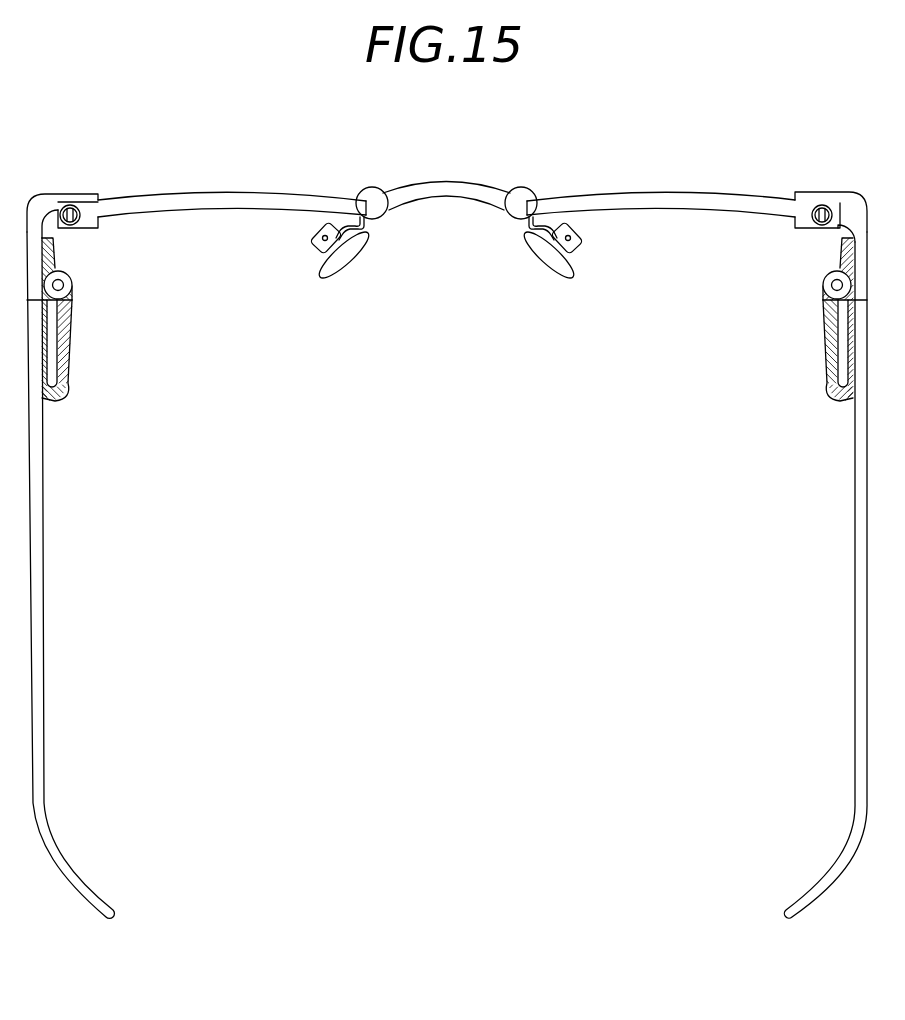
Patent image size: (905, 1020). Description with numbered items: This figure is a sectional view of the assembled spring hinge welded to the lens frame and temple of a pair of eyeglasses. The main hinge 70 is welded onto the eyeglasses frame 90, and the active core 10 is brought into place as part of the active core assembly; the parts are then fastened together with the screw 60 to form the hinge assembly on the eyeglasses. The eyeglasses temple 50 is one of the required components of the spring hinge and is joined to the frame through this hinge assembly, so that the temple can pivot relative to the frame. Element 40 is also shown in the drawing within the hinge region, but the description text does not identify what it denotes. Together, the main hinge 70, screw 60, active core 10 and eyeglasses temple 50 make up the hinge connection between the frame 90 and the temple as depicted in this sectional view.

The eyeglasses frame 90 is at (843, 203).
The main hinge 70 is at (843, 262).
The screw 60 is at (833, 284).
The active core 10 is at (820, 290).
The spring 40 is at (820, 332).
The eyeglasses temple 50 is at (857, 437).